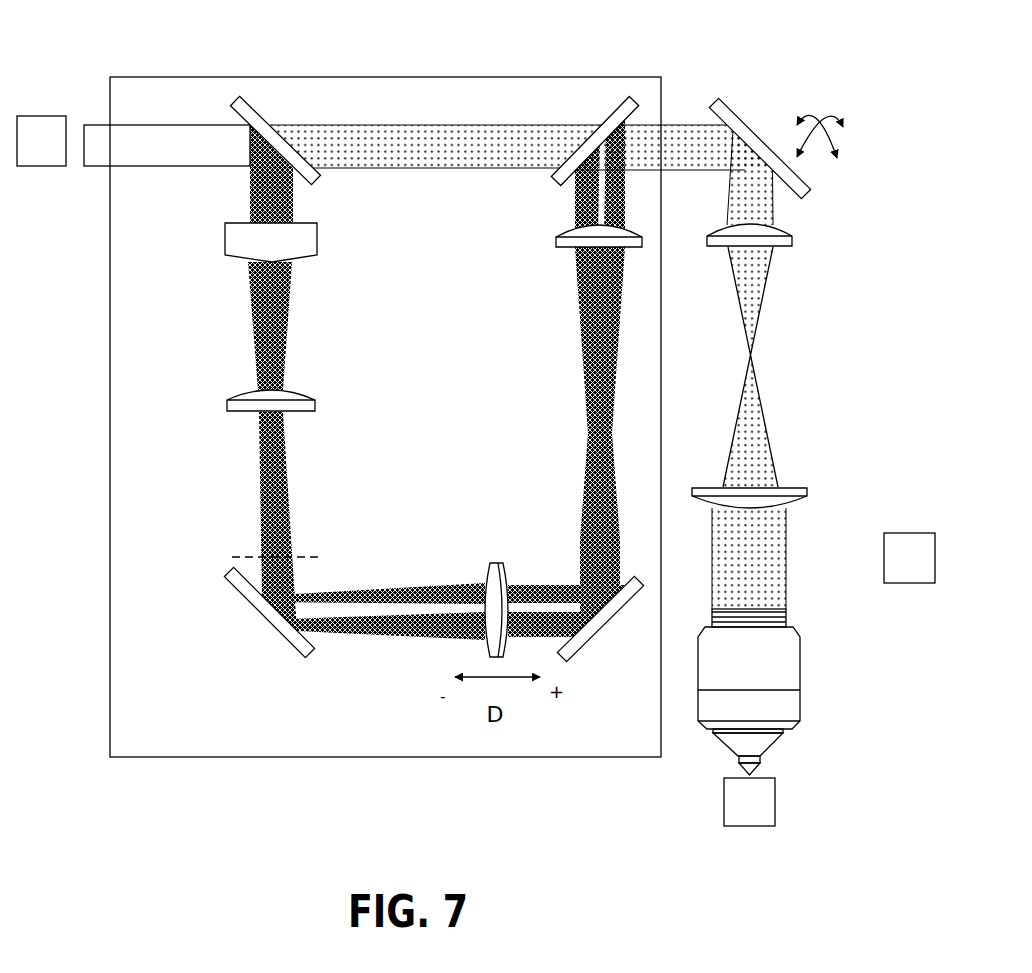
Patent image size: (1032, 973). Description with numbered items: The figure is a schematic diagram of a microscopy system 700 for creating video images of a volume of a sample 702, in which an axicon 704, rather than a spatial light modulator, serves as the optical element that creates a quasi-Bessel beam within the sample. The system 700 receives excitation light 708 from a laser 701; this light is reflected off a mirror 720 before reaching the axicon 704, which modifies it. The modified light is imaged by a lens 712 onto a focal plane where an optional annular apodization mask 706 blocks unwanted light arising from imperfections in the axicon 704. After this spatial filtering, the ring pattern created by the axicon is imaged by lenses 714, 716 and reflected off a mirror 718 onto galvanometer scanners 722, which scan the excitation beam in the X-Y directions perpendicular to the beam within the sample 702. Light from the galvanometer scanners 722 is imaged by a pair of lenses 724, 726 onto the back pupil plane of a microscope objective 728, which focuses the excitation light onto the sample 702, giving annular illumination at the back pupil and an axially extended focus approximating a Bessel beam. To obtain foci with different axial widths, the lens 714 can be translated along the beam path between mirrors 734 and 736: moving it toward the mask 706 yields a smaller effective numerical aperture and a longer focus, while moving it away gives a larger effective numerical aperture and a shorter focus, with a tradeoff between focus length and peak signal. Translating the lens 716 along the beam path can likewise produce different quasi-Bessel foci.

The microscopy system 700 is at (122, 29).
The laser 701 is at (27, 151).
The sample 702 is at (735, 812).
The axicon 704 is at (229, 243).
The annular apodization mask 706 is at (238, 556).
The excitation light 708 is at (128, 168).
The lens 712 is at (228, 400).
The lens 714 is at (490, 563).
The lens 716 is at (556, 237).
The mirror 718 is at (617, 98).
The mirror 720 is at (257, 107).
The galvanometer scanners 722 is at (757, 130).
The lens 724 is at (793, 237).
The lens 726 is at (808, 497).
The microscope objective 728 is at (800, 700).
The mirror 734 is at (255, 617).
The mirror 736 is at (618, 610).